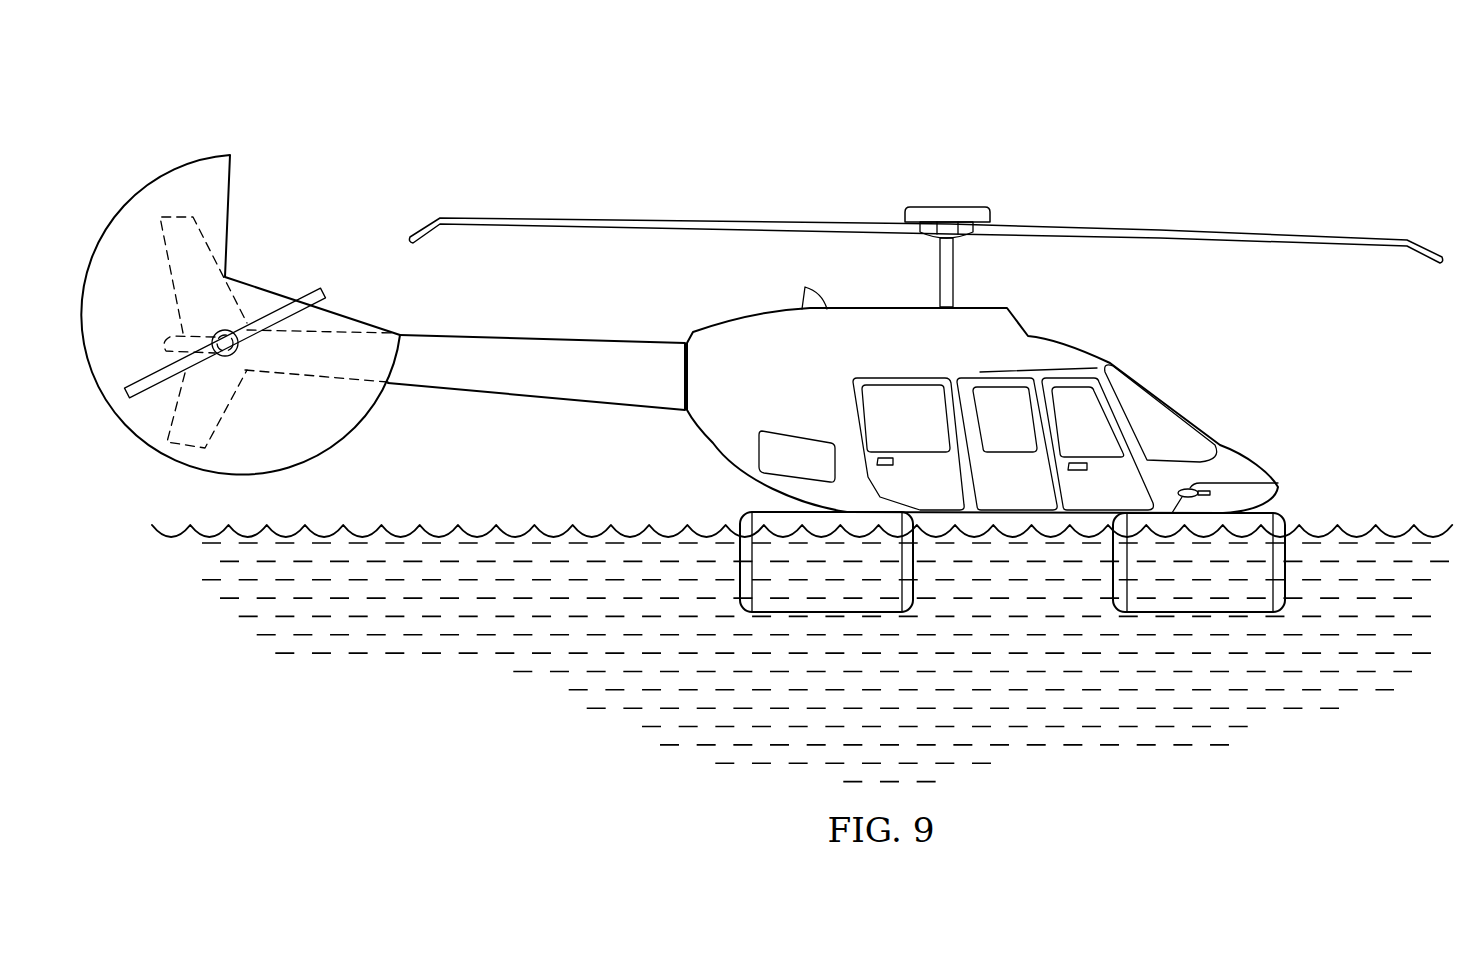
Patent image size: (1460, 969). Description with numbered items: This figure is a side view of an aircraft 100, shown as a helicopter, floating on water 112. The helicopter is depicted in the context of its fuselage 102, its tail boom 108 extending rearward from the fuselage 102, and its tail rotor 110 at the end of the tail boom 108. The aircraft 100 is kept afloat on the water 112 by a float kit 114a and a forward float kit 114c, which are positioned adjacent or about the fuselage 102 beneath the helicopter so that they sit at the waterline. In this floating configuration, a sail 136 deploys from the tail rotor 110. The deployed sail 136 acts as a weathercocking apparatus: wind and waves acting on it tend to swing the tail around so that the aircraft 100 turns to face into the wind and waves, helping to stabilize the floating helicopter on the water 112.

The aircraft 100 is at (1200, 104).
The fuselage 102 is at (1248, 448).
The tail boom 108 is at (565, 338).
The tail rotor 110 is at (308, 288).
The water 112 is at (440, 535).
The float kit 114a is at (740, 556).
The forward float kit 114c is at (1285, 558).
The sail 136 is at (106, 313).